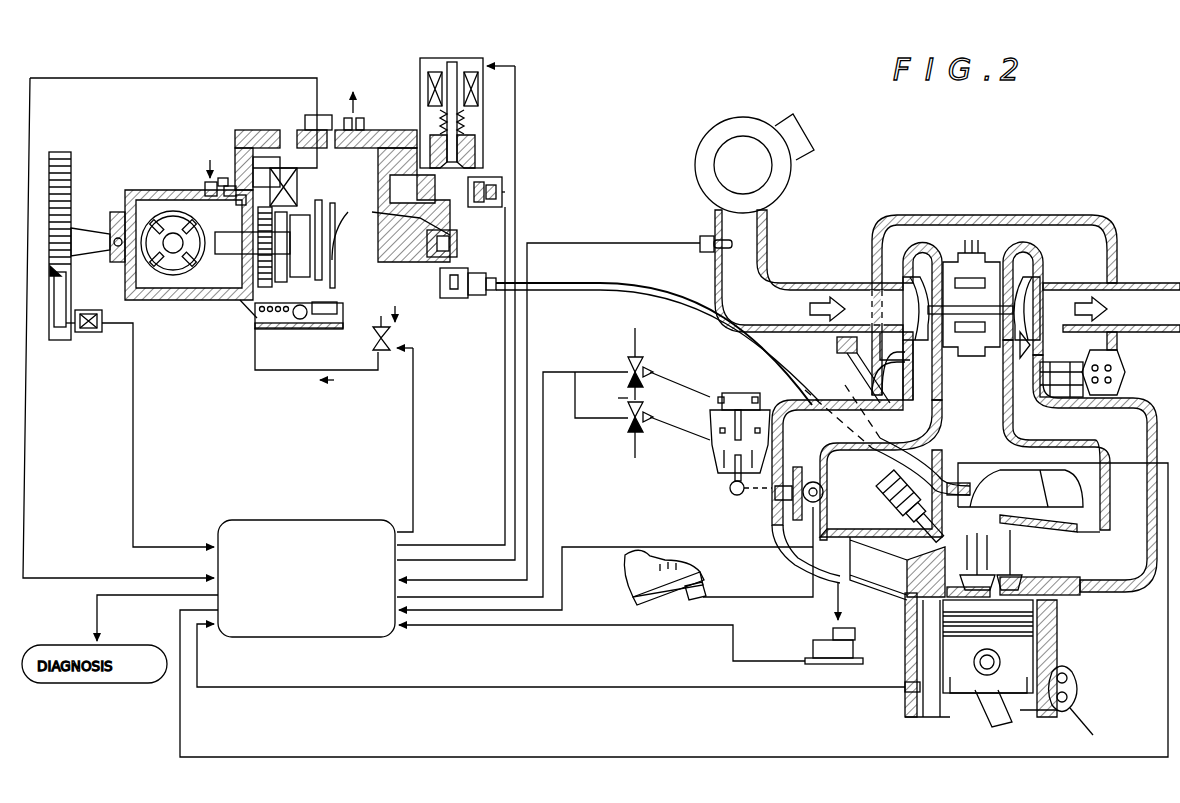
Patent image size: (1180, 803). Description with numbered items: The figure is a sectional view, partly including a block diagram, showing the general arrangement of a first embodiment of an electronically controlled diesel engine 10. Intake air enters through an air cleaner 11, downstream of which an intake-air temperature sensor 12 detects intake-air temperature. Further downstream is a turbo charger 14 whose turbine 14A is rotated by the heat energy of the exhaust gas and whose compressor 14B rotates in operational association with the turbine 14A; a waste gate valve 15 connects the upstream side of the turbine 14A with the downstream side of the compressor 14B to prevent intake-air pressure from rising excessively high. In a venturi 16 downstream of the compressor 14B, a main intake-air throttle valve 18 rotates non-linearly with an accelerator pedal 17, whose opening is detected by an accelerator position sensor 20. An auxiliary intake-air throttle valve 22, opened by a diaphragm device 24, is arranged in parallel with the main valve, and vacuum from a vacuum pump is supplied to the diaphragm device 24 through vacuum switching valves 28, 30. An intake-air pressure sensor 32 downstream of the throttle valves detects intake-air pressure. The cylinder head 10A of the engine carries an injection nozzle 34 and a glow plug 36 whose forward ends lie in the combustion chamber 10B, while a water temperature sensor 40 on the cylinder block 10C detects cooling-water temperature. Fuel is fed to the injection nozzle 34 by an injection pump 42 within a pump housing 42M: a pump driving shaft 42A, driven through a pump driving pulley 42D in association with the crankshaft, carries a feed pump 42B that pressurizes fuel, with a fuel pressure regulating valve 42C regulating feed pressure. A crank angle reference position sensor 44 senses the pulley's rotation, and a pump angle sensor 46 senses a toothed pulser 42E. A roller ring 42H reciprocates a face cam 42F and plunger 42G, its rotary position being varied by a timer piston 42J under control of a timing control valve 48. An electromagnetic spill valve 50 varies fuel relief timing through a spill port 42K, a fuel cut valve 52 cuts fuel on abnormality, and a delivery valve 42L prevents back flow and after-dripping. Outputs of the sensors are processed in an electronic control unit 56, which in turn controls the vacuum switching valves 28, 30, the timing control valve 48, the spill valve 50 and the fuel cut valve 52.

The diesel engine 10 is at (985, 583).
The cylinder head 10A is at (990, 480).
The engine combustion chamber 10B is at (1005, 575).
The cylinder block 10C is at (905, 655).
The air cleaner 11 is at (697, 172).
The intake-air temperature sensor 12 is at (703, 235).
The turbo charger 14 is at (965, 307).
The turbine 14A is at (1038, 268).
The compressor 14B is at (905, 276).
The waste gate valve 15 is at (1112, 368).
The venturi 16 is at (772, 447).
The accelerator pedal 17 is at (635, 597).
The main intake-air throttle valve 18 is at (822, 489).
The accelerator position sensor 20 is at (803, 495).
The auxiliary intake-air throttle valve 22 is at (768, 508).
The diaphragm device 24 is at (730, 392).
The vacuum switching valve 28 is at (622, 368).
The vacuum switching valve 30 is at (626, 421).
The intake-air pressure sensor 32 is at (845, 637).
The injection nozzle 34 is at (892, 518).
The glow plug 36 is at (985, 555).
The water temperature sensor 40 is at (905, 692).
The injection pump 42 is at (284, 72).
The pump driving shaft 42A is at (89, 229).
The feed pump 42B is at (173, 276).
The fuel pressure regulating valve 42C is at (230, 208).
The pump driving pulley 42D is at (64, 152).
The pulser 42E is at (243, 308).
The face cam 42F is at (305, 228).
The plunger 42G is at (411, 205).
The roller ring 42H is at (305, 187).
The timer piston 42J is at (316, 336).
The spill port 42K is at (460, 243).
The delivery valve 42L is at (456, 298).
The pump housing 42M is at (260, 130).
The crank angle reference position sensor 44 is at (90, 333).
The pump angle sensor 46 is at (238, 195).
The timing control valve 48 is at (385, 354).
The electromagnetic spill valve 50 is at (483, 60).
The fuel cut valve 52 is at (500, 177).
The electronic control unit 56 is at (302, 520).